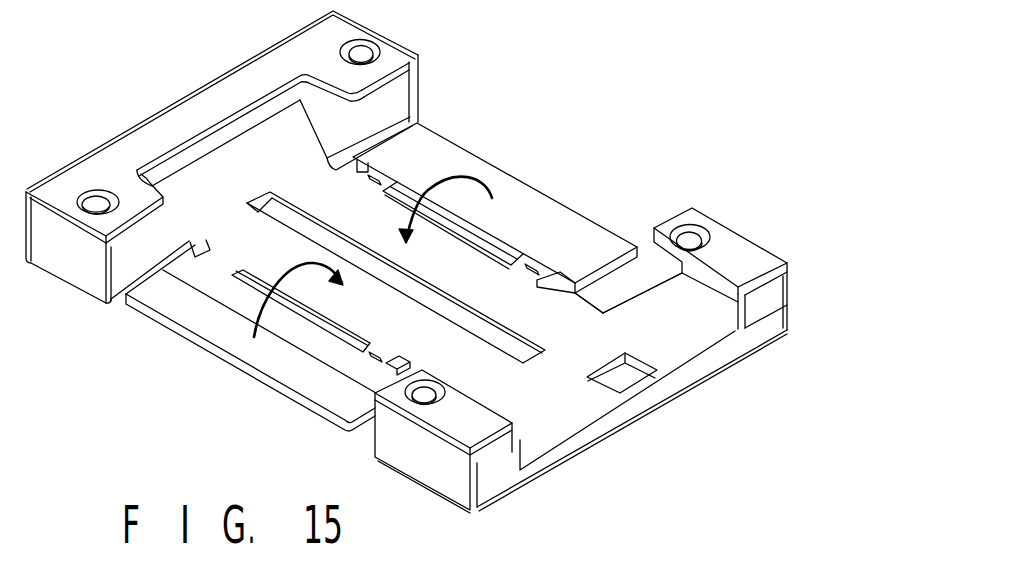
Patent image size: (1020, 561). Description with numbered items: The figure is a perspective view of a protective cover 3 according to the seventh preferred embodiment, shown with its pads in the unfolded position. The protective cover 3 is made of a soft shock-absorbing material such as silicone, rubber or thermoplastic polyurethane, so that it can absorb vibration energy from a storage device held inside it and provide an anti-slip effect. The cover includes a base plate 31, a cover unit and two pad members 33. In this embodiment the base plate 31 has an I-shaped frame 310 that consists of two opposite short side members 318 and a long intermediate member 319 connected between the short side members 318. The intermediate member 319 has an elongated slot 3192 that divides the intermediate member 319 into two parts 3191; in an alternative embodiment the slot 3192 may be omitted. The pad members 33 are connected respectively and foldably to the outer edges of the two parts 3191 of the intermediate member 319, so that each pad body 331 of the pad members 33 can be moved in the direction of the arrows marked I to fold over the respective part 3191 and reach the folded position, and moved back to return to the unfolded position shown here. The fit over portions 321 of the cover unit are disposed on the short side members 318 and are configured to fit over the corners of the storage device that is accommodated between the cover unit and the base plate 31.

The protective cover 3 is at (645, 183).
The base plate 31 is at (530, 418).
The pad member 33 is at (497, 158).
The short side member 318 is at (196, 185).
The long intermediate member 319 is at (540, 318).
The part of the intermediate member 3191 is at (397, 217).
The elongated slot 3192 is at (273, 213).
The fit over portion 321 is at (165, 93).
The pad body 331 is at (522, 207).
The I-shaped frame 310 is at (675, 331).